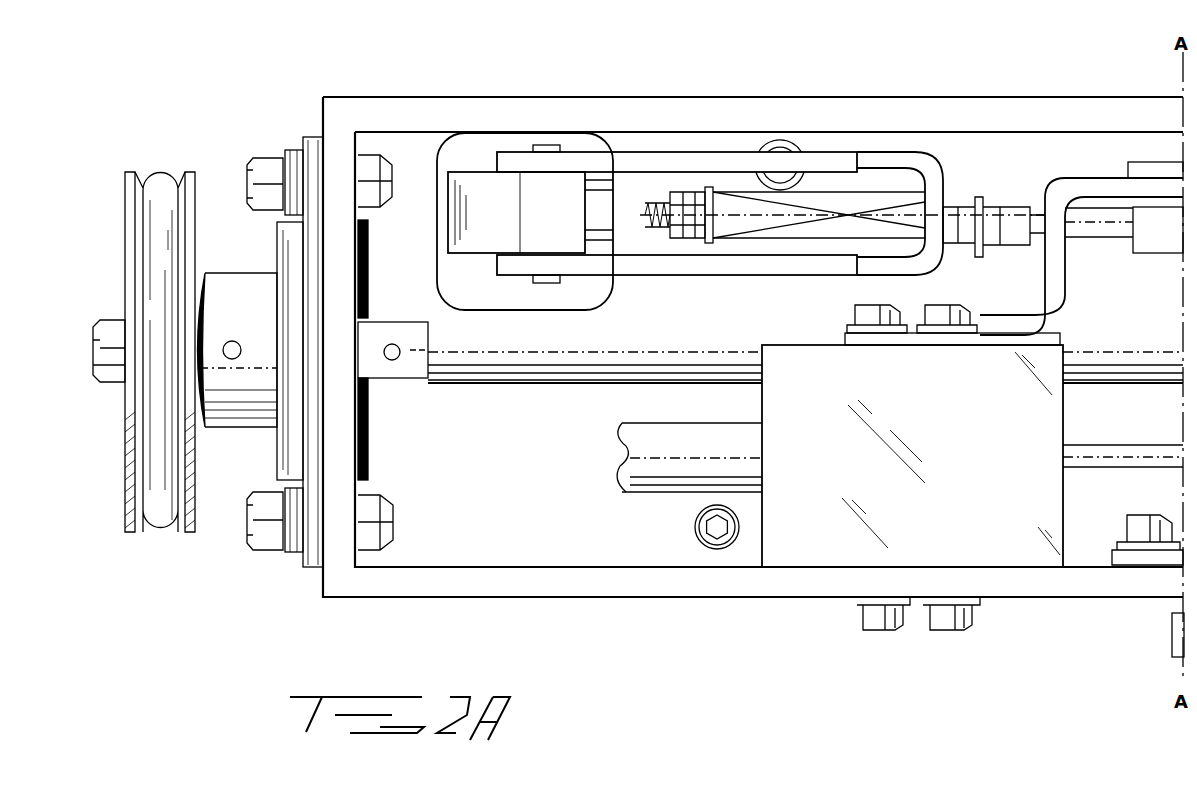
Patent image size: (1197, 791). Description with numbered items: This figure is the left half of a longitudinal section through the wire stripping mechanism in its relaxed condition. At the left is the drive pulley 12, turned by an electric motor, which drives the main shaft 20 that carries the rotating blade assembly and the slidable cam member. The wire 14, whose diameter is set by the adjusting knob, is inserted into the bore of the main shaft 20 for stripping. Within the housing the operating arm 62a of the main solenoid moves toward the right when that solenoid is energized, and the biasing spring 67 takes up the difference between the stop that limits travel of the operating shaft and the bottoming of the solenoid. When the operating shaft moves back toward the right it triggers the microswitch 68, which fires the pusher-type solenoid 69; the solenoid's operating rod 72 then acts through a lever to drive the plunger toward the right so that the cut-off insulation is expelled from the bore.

The drive pulley 12 is at (136, 180).
The wire 14 is at (305, 22).
The main shaft 20 is at (488, 370).
The operating arm 62a is at (602, 220).
The biasing spring 67 is at (753, 237).
The microswitch 68 is at (1143, 240).
The pusher-type solenoid 69 is at (912, 456).
The operating rod 72 is at (1143, 470).